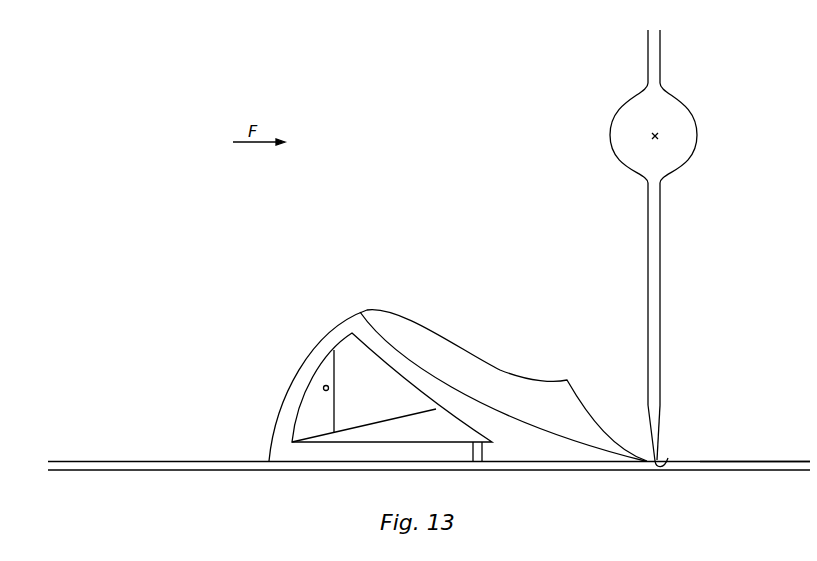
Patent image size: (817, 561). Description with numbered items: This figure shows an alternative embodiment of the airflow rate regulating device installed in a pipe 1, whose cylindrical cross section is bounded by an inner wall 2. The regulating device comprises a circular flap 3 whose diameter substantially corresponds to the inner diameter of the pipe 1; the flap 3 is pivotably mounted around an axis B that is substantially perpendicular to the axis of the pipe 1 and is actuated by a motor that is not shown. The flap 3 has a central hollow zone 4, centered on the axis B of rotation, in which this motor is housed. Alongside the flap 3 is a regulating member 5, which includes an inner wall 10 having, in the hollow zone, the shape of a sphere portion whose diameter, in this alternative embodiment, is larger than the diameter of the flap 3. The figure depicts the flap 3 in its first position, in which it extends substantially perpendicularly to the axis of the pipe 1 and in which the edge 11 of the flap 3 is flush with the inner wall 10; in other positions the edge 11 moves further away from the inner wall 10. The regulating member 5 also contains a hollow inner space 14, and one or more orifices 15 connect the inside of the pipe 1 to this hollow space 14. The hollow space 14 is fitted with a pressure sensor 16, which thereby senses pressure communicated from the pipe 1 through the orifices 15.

The pipe 1 is at (690, 466).
The inner wall 2 is at (748, 461).
The circular flap 3 is at (653, 228).
The central hollow zone 4 is at (673, 155).
The regulating member 5 is at (318, 356).
The inner wall 10 is at (447, 391).
The edge of the flap 11 is at (668, 458).
The hollow inner space 14 is at (312, 422).
The orifice 15 is at (323, 386).
The pressure sensor 16 is at (482, 455).